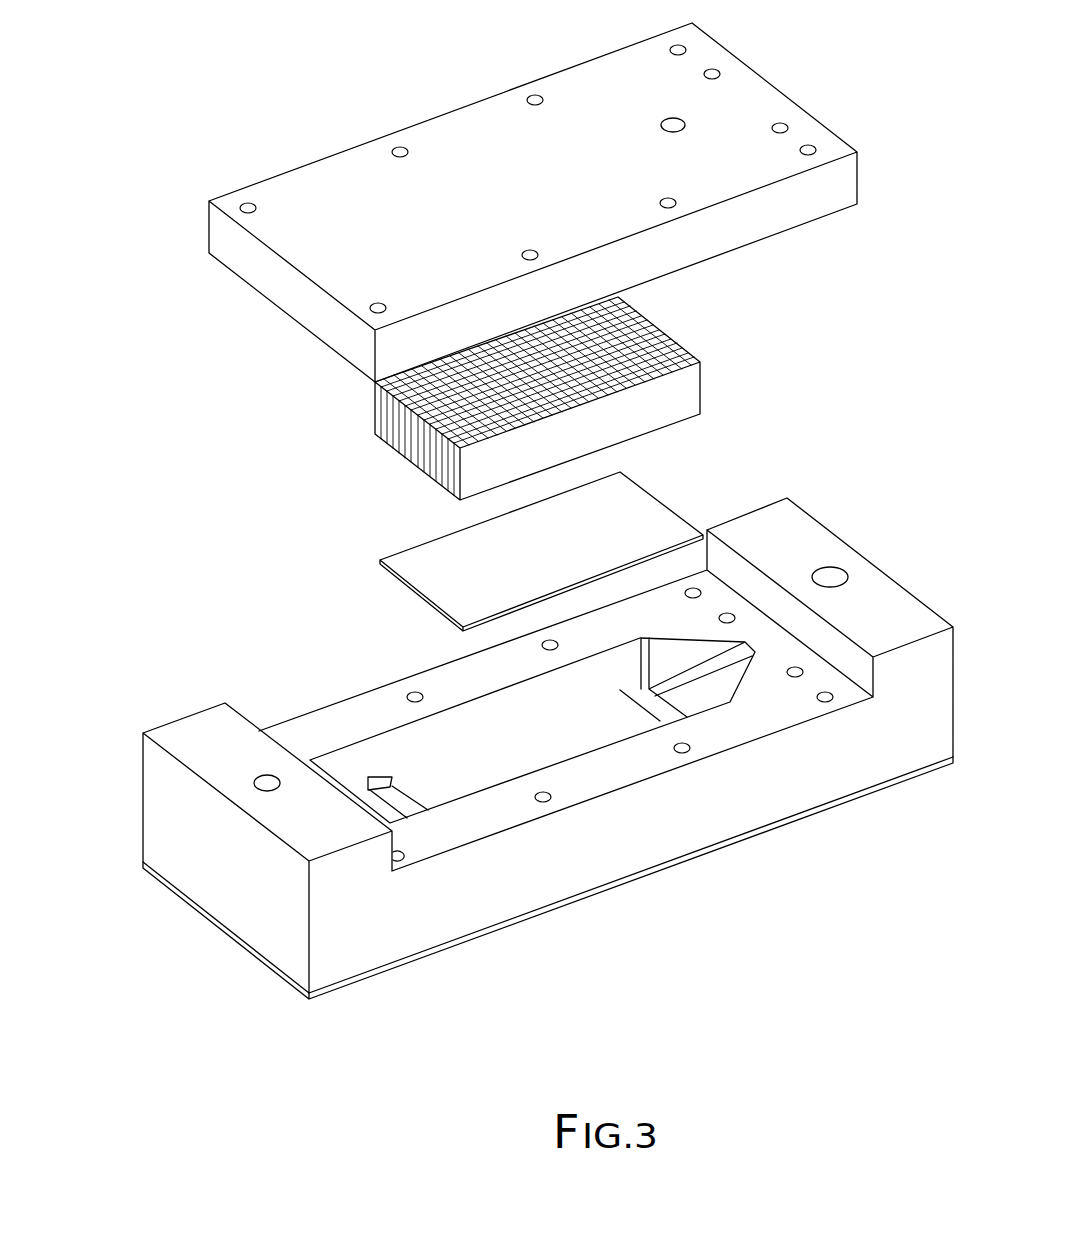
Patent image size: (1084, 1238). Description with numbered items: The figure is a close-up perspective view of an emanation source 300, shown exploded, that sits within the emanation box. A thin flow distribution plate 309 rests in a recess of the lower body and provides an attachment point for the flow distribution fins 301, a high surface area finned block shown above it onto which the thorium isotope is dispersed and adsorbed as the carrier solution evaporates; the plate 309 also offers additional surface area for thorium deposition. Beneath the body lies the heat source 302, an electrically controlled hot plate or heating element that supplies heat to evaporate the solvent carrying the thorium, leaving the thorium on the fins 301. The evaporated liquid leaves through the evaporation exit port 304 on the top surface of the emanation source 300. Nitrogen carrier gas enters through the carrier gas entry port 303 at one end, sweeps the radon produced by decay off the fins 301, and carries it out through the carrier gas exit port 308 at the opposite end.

The emanation source 300 is at (151, 724).
The flow distribution fins 301 is at (714, 380).
The heat source 302 is at (439, 956).
The N2 carrier gas entry port 303 is at (246, 778).
The evaporation exit port 304 is at (696, 108).
The N2 carrier gas exit port 308 is at (833, 564).
The flow distribution plate 309 is at (400, 591).